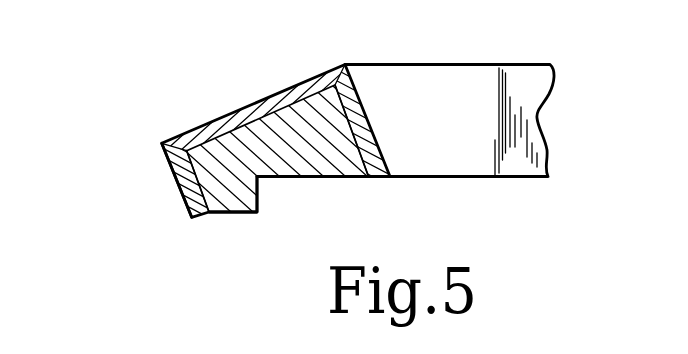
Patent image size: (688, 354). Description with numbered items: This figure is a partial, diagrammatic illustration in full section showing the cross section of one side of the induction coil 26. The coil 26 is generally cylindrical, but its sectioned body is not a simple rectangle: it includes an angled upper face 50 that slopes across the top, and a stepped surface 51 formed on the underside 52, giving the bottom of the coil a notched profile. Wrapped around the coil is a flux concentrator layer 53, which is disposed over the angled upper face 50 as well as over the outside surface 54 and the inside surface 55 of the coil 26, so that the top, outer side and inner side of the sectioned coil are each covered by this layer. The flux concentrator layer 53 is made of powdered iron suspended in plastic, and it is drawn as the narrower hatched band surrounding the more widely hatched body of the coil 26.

The induction coil 26 is at (574, 80).
The angled upper face 50 is at (268, 116).
The stepped surface 51 is at (260, 180).
The underside 52 is at (281, 186).
The flux concentrator layer 53 is at (172, 172).
The outside surface 54 is at (185, 205).
The inside surface 55 is at (363, 153).